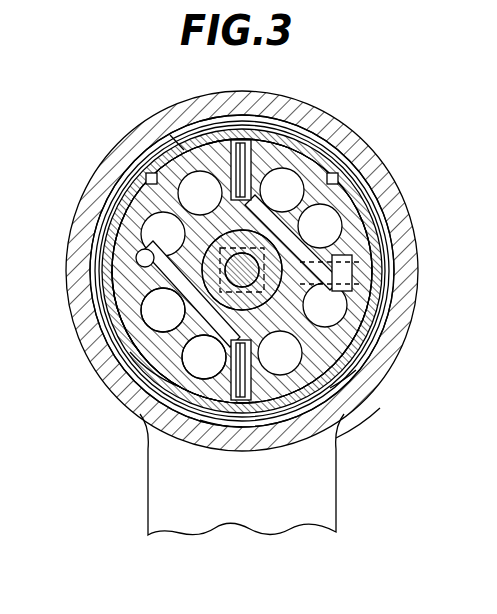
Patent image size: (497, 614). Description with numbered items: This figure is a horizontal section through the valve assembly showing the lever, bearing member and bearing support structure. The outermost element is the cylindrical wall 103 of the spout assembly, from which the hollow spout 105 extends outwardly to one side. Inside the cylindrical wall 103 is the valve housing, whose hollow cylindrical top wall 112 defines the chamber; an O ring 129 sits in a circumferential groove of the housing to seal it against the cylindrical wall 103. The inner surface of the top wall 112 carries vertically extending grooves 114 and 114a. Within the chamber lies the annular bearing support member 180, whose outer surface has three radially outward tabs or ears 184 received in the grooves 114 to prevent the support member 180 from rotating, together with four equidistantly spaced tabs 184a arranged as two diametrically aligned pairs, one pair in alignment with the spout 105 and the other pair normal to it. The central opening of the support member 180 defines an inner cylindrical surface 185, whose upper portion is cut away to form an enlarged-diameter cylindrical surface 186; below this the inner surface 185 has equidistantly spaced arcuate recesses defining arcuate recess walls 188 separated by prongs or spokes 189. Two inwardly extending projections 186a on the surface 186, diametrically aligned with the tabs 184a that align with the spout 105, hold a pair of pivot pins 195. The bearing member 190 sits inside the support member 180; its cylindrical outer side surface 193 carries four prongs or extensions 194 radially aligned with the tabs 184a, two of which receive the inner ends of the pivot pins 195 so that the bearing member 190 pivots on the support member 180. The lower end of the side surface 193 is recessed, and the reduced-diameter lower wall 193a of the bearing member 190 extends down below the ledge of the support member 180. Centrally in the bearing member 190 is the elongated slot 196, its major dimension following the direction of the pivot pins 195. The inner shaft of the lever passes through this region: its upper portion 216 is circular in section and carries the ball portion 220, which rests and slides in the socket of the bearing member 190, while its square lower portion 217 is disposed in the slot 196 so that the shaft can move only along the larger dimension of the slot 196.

The cylindrical wall 103 is at (350, 140).
The hollow spout 105 is at (148, 520).
The hollow cylindrical top wall 112 is at (177, 144).
The vertically extending grooves 114 is at (147, 180).
The vertically extending grooves 114a is at (137, 258).
The O ring 129 is at (291, 130).
The annular bearing support member 180 is at (344, 220).
The tabs or ears 184 is at (138, 188).
The tabs 184a is at (118, 282).
The inner cylindrical surface 185 is at (352, 297).
The enlarged-diameter cylindrical surface 186 is at (170, 340).
The inwardly extending projections 186a is at (222, 171).
The arcuate recess walls 188 is at (140, 233).
The prongs or spokes 189 is at (165, 318).
The bearing member 190 is at (137, 357).
The cylindrical outer side surface 193 is at (352, 380).
The seal lip 193a is at (343, 419).
The prongs or extensions 194 is at (306, 152).
The pivot pins 195 is at (251, 140).
The elongated slot 196 is at (203, 416).
The upper portion 216 is at (396, 314).
The lower portion 217 is at (388, 338).
The ball portion 220 is at (260, 270).